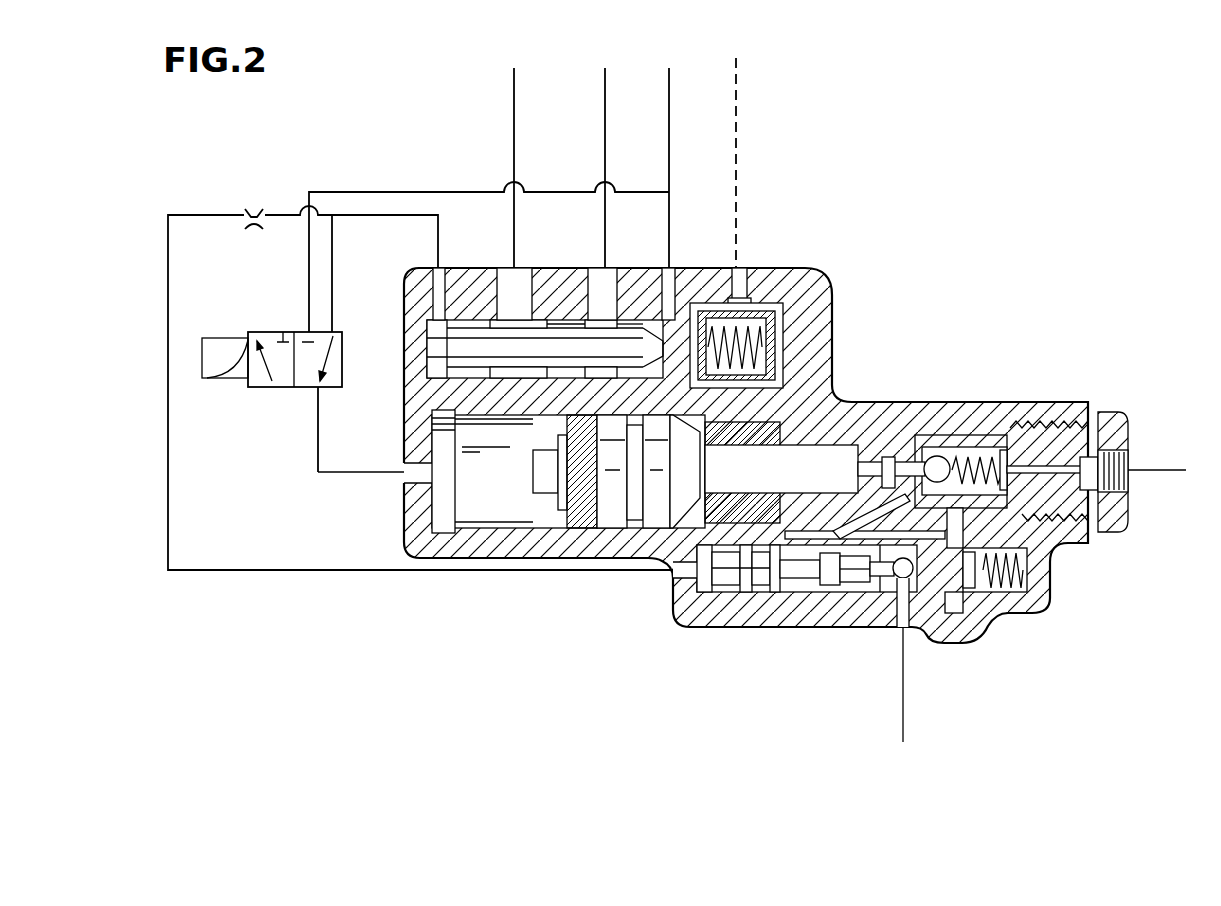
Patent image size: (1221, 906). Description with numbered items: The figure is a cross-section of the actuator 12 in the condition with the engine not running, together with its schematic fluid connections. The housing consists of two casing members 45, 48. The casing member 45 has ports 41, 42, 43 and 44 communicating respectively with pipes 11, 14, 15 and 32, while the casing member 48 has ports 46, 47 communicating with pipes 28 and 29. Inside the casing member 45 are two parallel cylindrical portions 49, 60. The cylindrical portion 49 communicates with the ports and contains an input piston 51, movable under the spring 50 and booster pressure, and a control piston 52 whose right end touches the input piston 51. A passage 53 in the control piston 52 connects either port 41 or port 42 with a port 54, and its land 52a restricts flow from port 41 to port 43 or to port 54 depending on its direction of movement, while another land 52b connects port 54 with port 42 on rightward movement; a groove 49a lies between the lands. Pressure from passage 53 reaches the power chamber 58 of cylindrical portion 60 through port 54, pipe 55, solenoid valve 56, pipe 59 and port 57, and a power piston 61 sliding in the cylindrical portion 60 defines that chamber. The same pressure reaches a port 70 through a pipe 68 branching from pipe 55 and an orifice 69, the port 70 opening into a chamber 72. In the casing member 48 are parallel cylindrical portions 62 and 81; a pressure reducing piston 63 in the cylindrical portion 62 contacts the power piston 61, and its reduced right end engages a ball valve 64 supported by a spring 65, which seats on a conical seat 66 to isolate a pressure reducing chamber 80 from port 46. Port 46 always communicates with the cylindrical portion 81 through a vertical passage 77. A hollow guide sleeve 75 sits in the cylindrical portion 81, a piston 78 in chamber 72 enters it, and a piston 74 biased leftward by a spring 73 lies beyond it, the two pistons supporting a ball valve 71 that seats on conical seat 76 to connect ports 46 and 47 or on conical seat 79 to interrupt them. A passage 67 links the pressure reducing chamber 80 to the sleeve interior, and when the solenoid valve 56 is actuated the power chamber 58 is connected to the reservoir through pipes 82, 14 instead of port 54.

The pipe 11 is at (606, 122).
The actuator 12 is at (997, 243).
The pipe 14 is at (670, 122).
The pipe 15 is at (515, 122).
The pipe 28 is at (1162, 469).
The pipe 29 is at (903, 735).
The pipe 32 is at (738, 122).
The port 41 is at (599, 270).
The port 42 is at (667, 270).
The port 43 is at (507, 270).
The port 44 is at (741, 270).
The casing member 45 is at (497, 544).
The port 46 is at (1130, 457).
The port 47 is at (899, 626).
The casing member 48 is at (816, 358).
The cylindrical portion 49 is at (428, 343).
The spool groove 49a is at (583, 330).
The spring 50 is at (765, 345).
The input piston 51 is at (692, 300).
The control piston 52 is at (530, 360).
The land 52a is at (608, 364).
The land 52b is at (652, 326).
The passage 53 is at (465, 358).
The port 54 is at (434, 270).
The pipe 55 is at (377, 218).
The solenoid valve 56 is at (287, 388).
The port 57 is at (402, 479).
The power chamber 58 is at (521, 492).
The pipe 59 is at (318, 447).
The cylindrical portion 60 is at (478, 534).
The power piston 61 is at (613, 528).
The cylindrical portion 62 is at (800, 446).
The pressure reducing piston 63 is at (645, 471).
The ball valve 64 is at (952, 457).
The spring 65 is at (977, 447).
The conical seat 66 is at (942, 447).
The passage 67 is at (843, 515).
The pipe 68 is at (217, 214).
The orifice 69 is at (253, 208).
The port 70 is at (685, 576).
The ball valve 71 is at (888, 597).
The chamber 72 is at (676, 621).
The spring 73 is at (1033, 614).
The piston 74 is at (996, 631).
The guide sleeve 75 is at (813, 605).
The conical seat 76 is at (870, 600).
The vertical passage 77 is at (957, 530).
The piston 78 is at (760, 594).
The conical seat 79 is at (913, 622).
The pressure reducing chamber 80 is at (910, 452).
The cylindrical portion 81 is at (1000, 548).
The pipe 82 is at (370, 192).